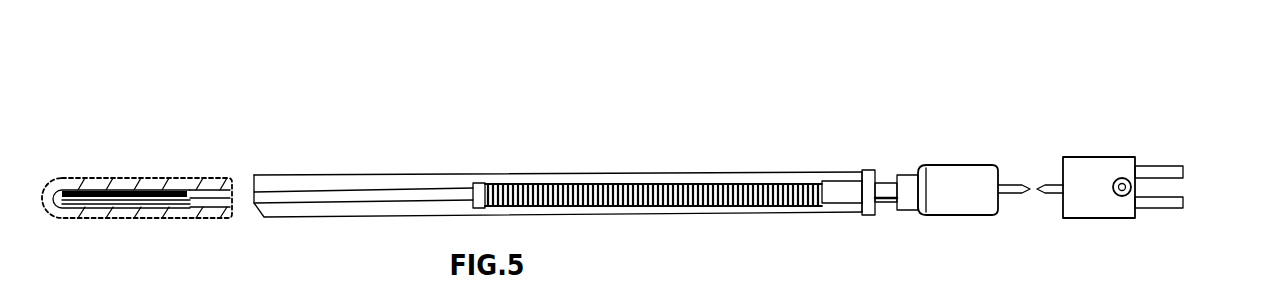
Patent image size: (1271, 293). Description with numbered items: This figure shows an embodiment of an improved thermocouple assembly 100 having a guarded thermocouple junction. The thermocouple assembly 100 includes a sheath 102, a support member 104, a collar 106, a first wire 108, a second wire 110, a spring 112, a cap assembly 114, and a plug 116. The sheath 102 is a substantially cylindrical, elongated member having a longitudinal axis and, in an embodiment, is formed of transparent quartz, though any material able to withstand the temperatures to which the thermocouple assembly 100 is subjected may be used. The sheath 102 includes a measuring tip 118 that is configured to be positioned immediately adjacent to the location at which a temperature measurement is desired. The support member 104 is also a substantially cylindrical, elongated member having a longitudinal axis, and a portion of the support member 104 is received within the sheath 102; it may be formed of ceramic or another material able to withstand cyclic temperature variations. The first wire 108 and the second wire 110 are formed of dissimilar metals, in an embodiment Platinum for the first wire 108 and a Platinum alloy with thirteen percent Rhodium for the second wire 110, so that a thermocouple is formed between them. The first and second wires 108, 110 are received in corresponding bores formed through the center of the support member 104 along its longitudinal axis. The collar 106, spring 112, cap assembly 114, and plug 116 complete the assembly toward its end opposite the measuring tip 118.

The thermocouple assembly 100 is at (494, 108).
The sheath 102 is at (378, 175).
The support member 104 is at (318, 197).
The collar 106 is at (483, 177).
The first wire 108 is at (152, 192).
The second wire 110 is at (152, 198).
The spring 112 is at (660, 183).
The cap assembly 114 is at (952, 173).
The plug 116 is at (1090, 170).
The measuring tip 118 is at (42, 198).